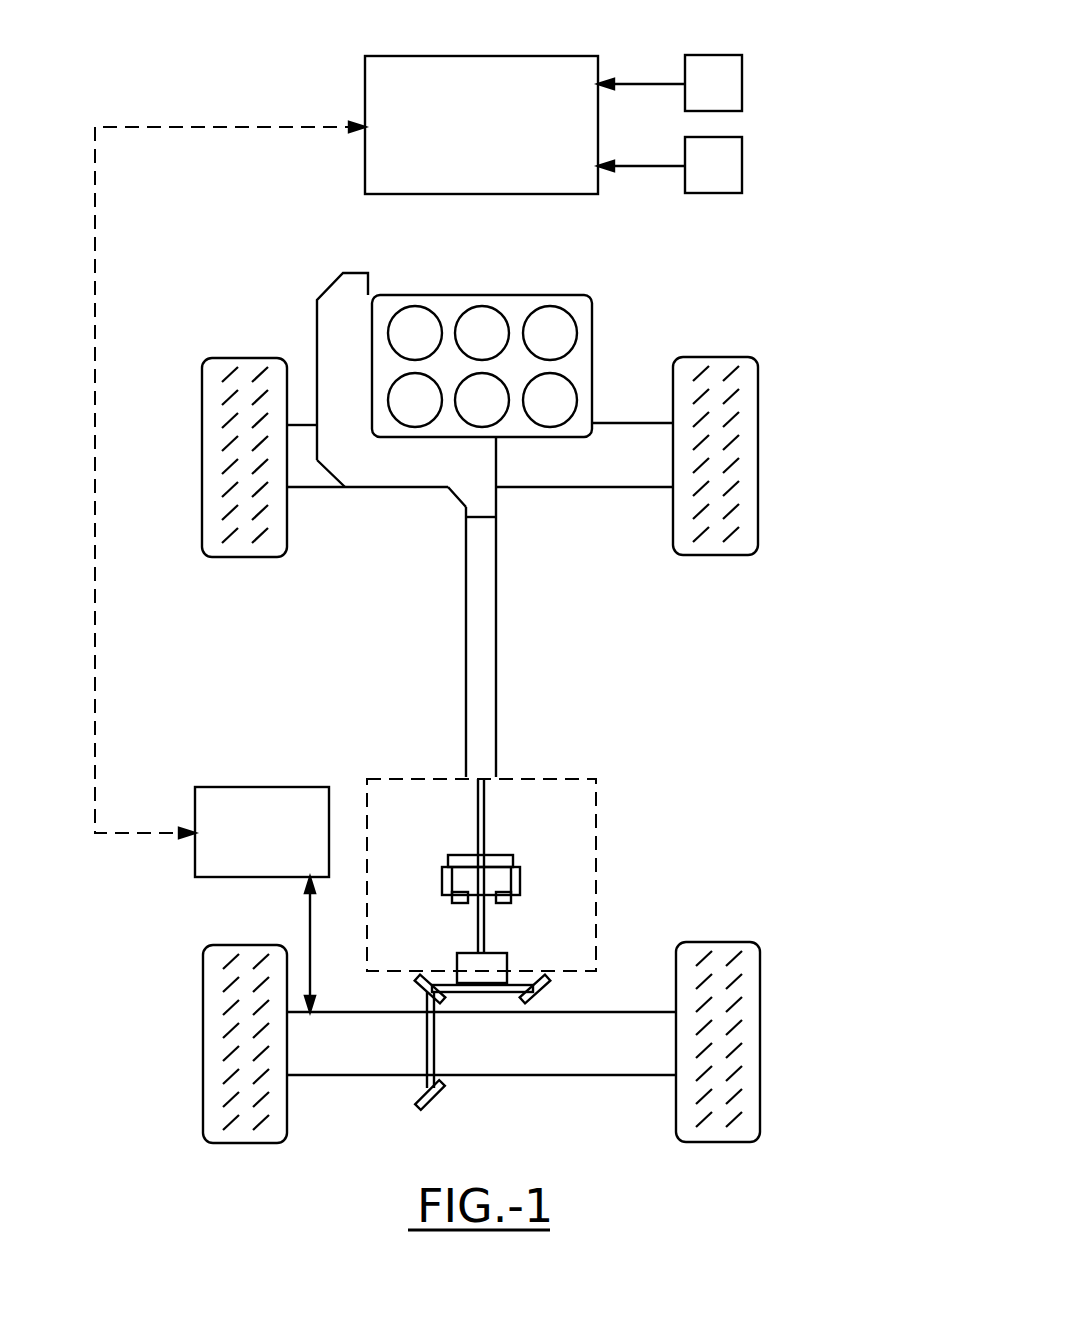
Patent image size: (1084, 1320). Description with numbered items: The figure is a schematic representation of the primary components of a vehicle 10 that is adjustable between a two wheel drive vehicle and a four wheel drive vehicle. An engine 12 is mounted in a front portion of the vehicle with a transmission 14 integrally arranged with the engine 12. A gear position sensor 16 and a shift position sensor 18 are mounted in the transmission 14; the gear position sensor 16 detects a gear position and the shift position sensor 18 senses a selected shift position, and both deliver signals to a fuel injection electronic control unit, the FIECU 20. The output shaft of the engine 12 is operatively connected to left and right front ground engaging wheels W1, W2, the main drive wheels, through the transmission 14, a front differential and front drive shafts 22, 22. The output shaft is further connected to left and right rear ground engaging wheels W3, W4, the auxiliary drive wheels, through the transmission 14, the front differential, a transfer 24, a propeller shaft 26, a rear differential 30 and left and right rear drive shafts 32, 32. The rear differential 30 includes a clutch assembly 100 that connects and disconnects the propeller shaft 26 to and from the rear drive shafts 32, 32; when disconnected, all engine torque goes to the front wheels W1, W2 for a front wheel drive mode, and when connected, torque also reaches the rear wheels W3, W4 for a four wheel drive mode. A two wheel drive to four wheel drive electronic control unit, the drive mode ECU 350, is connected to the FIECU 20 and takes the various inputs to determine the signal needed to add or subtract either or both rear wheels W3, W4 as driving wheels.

The vehicle 10 is at (858, 112).
The engine 12 is at (545, 297).
The transmission 14 is at (380, 472).
The gear position sensor 16 is at (716, 70).
The shift position sensor 18 is at (730, 173).
The fuel injection electronic control unit (FIECU) 20 is at (373, 172).
The front drive shafts 22 is at (325, 481).
The transfer 24 is at (490, 498).
The propeller shaft 26 is at (483, 653).
The rear differential 30 is at (676, 772).
The rear drive shafts 32 is at (342, 1065).
The clutch assembly 100 is at (608, 885).
The 2 wheel drive to 4 wheel drive electronic control unit (2/4WD-ECU) 350 is at (195, 865).
The left front ground engaging wheel W1 is at (238, 360).
The right front ground engaging wheel W2 is at (733, 357).
The left rear ground engaging wheel W3 is at (210, 1100).
The right rear ground engaging wheel W4 is at (752, 1065).